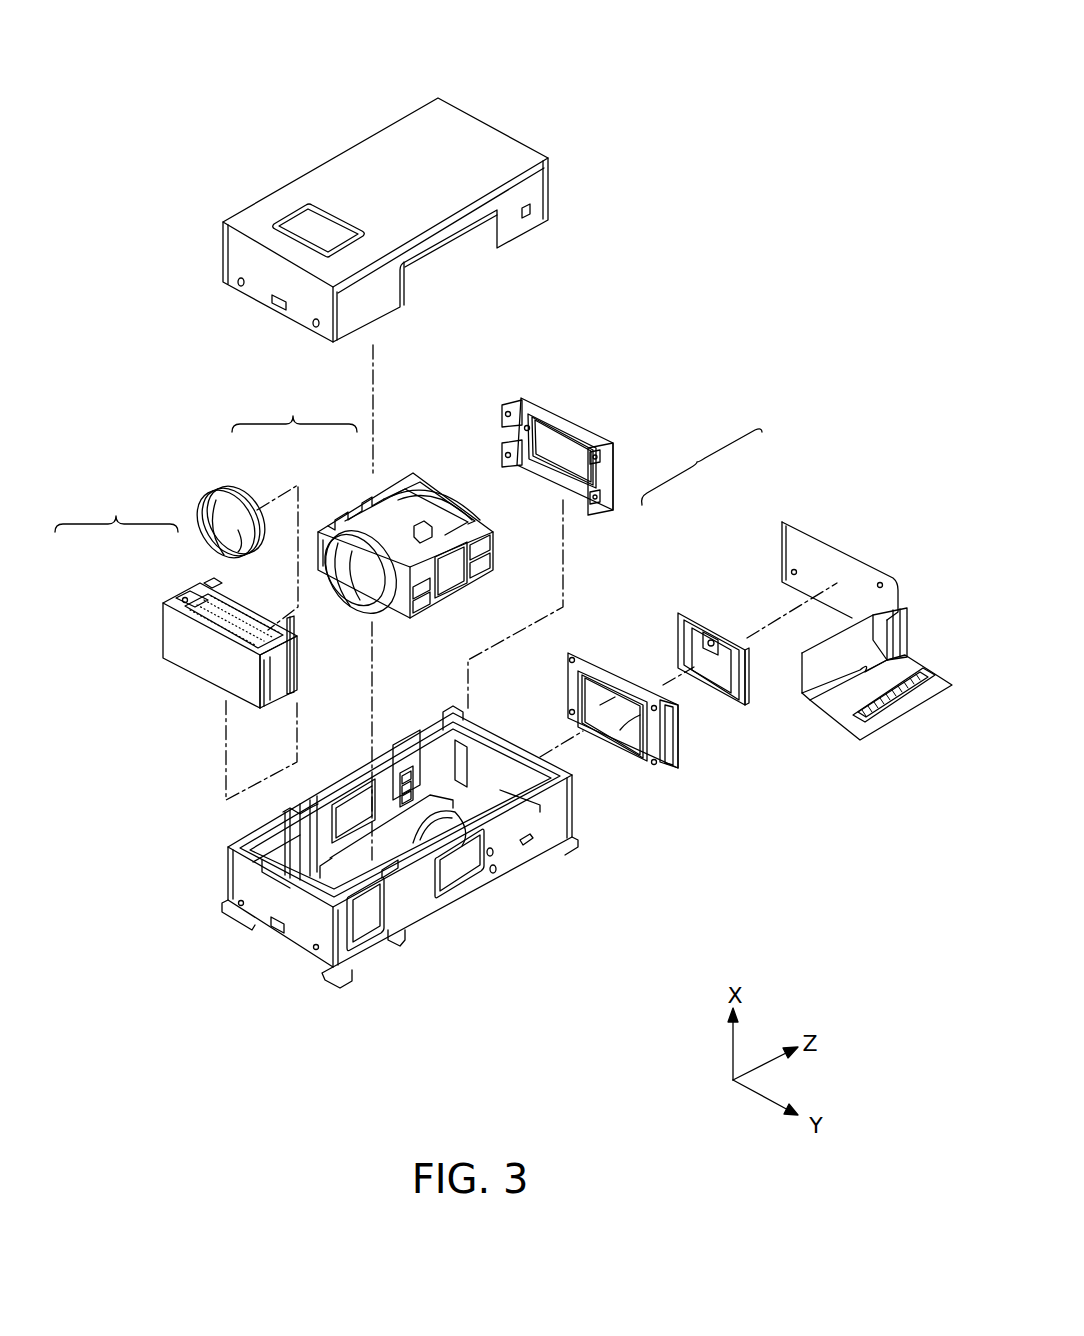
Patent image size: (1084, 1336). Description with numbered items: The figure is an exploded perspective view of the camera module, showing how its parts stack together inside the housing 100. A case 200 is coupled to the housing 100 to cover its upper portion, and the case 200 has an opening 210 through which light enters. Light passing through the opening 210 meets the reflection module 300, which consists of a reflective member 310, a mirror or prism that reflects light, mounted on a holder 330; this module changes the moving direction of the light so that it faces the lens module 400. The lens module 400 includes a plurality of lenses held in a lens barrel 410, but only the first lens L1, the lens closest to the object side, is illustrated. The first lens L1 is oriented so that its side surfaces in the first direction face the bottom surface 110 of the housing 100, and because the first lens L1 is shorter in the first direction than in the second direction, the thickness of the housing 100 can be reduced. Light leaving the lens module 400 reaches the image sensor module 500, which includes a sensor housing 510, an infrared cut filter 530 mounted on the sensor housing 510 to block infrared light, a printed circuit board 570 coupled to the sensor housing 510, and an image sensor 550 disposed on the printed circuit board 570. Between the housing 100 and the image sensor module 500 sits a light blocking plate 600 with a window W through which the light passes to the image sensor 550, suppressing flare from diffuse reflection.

The housing 100 is at (241, 885).
The bottom surface 110 is at (415, 837).
The case 200 is at (364, 172).
The opening 210 is at (299, 227).
The reflection module 300 is at (171, 598).
The reflective member 310 is at (207, 615).
The holder 330 is at (185, 643).
The lens module 400 is at (339, 508).
The first lens L1 is at (222, 517).
The lens barrel 410 is at (364, 525).
The image sensor module 500 is at (760, 634).
The sensor housing 510 is at (620, 673).
The infrared cut filter 530 is at (627, 737).
The image sensor 550 is at (718, 693).
The printed circuit board 570 is at (797, 563).
The light blocking plate 600 is at (545, 410).
The window W is at (558, 445).